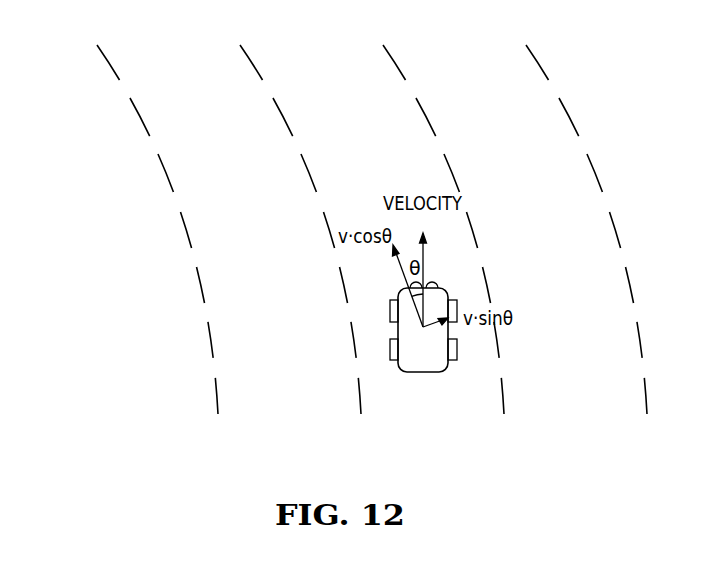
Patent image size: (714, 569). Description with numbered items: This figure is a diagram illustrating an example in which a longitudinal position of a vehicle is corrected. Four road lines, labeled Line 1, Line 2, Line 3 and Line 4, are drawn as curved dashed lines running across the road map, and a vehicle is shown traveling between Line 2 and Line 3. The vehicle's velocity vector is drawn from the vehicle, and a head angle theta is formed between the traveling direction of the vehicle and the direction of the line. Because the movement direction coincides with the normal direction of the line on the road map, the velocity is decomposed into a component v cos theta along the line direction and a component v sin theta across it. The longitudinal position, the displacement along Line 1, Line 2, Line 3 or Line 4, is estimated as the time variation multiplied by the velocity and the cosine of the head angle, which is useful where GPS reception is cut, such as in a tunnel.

The Line 1 (lane line) 1 is at (140, 214).
The Line 2 (lane line) 2 is at (284, 214).
The Line 3 (lane line) 3 is at (427, 214).
The Line 4 (lane line) 4 is at (570, 214).